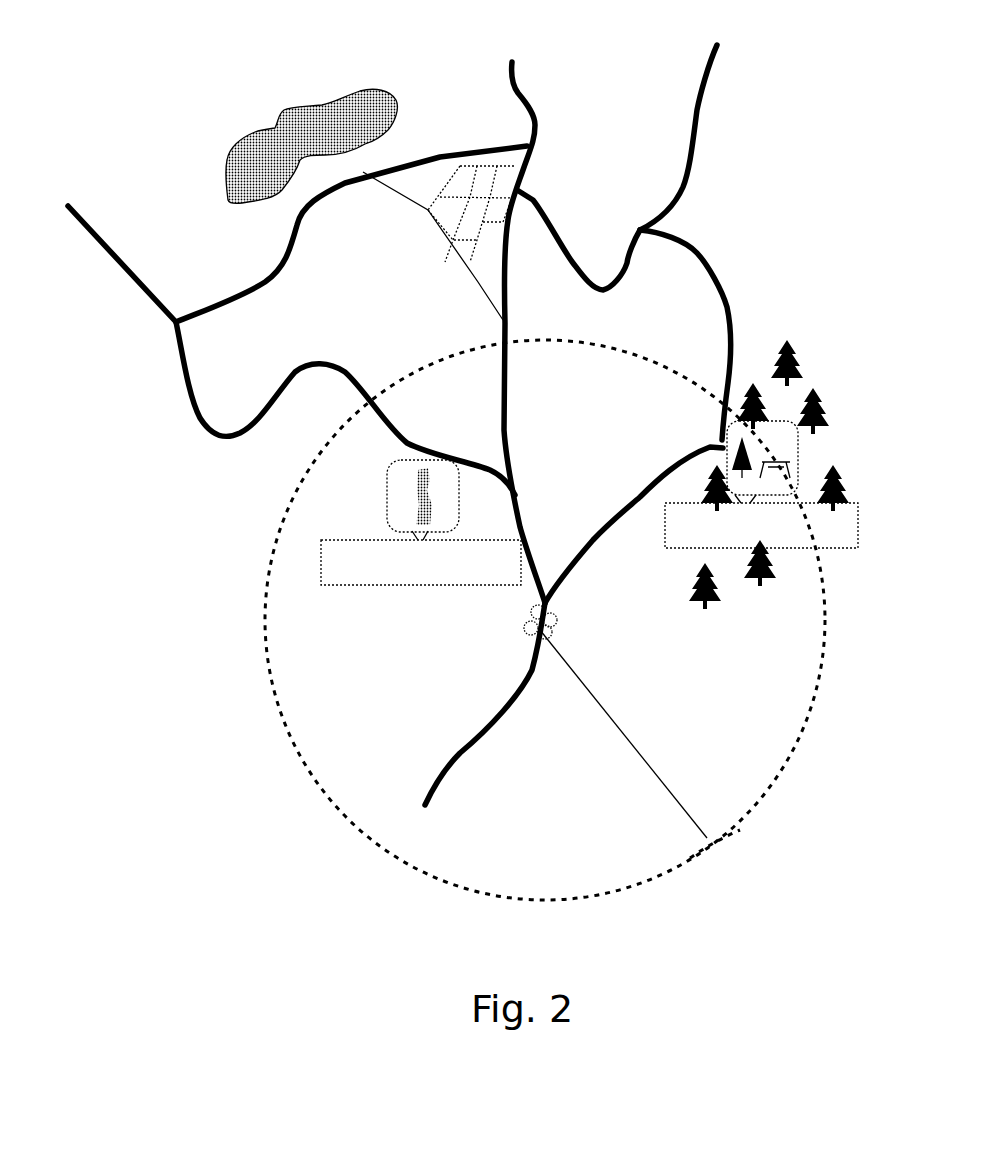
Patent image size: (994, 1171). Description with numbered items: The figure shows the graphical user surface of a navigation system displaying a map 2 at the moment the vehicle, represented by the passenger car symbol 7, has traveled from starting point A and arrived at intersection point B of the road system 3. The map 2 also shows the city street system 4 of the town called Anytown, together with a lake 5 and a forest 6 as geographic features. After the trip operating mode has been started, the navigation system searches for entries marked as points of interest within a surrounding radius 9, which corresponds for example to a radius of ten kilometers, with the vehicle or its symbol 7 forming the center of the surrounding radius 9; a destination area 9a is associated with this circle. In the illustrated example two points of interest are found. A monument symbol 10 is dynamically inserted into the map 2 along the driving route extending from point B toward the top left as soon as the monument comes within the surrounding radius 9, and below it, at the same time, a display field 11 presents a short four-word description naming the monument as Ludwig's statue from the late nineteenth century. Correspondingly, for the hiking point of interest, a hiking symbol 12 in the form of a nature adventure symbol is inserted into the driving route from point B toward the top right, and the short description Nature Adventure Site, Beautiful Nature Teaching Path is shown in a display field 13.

The map 2 is at (229, 532).
The road system 3 is at (456, 752).
The city street system 4 is at (448, 264).
The lake 5 is at (328, 104).
The forest 6 is at (832, 366).
The passenger car symbol 7 is at (526, 624).
The surrounding radius 9 is at (307, 762).
The destination area 9a is at (630, 850).
The monument symbol 10 is at (387, 492).
The display field for monument description 11 is at (398, 587).
The hiking symbol 12 is at (722, 445).
The display field for hiking description 13 is at (665, 548).